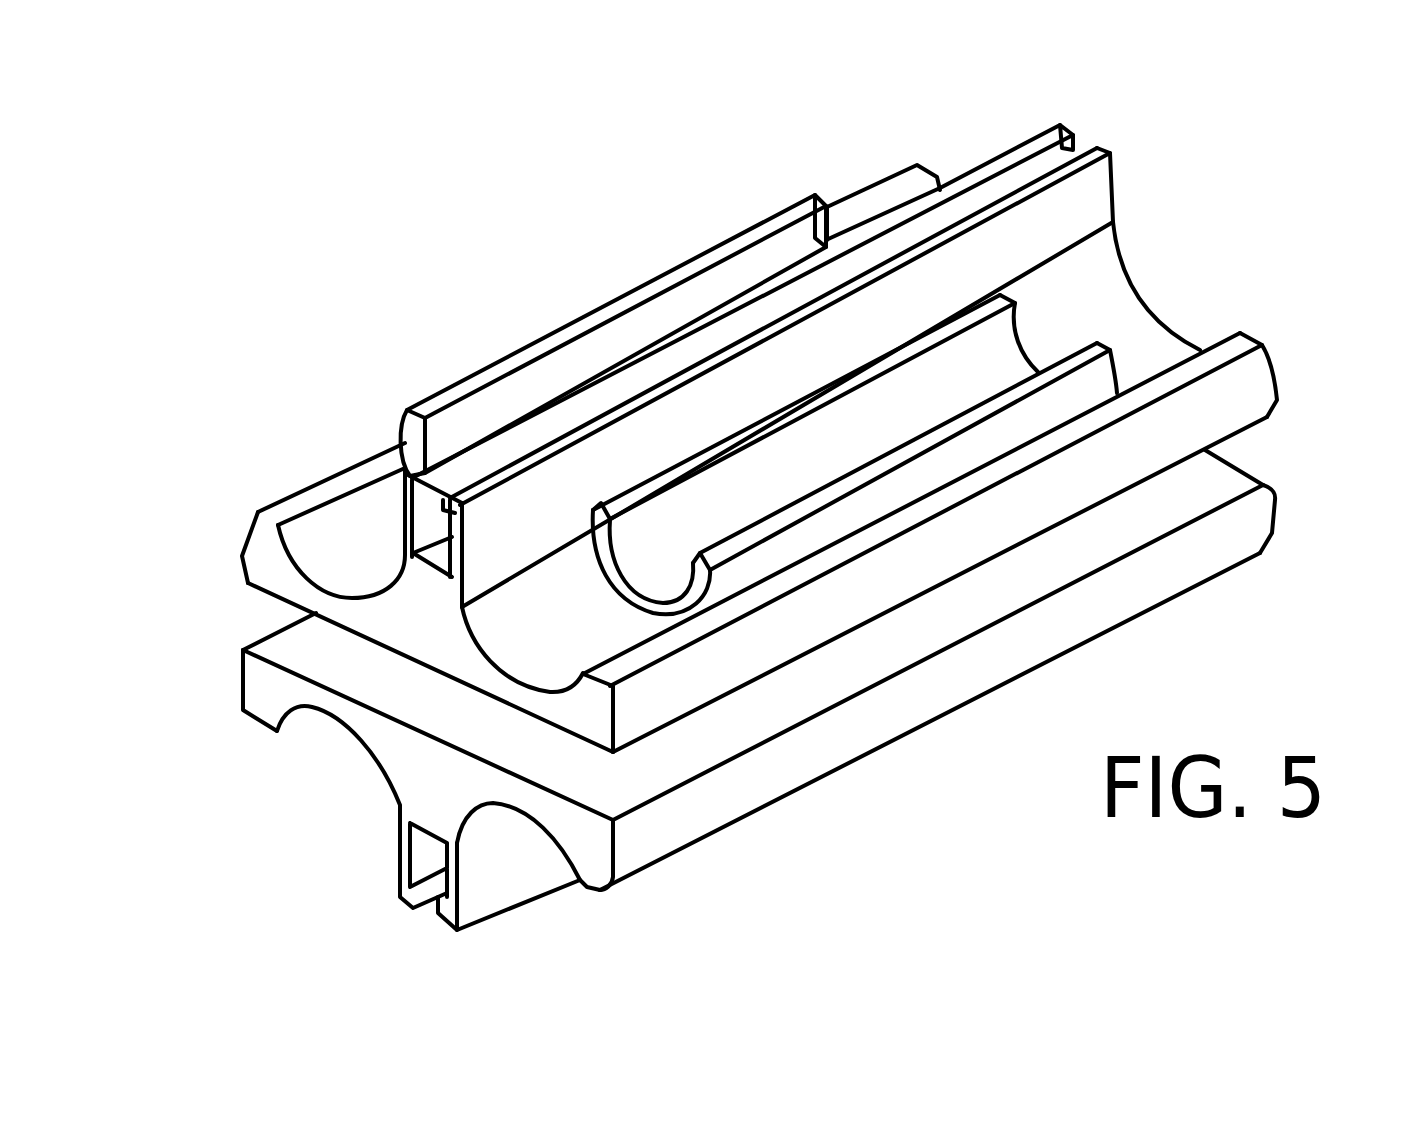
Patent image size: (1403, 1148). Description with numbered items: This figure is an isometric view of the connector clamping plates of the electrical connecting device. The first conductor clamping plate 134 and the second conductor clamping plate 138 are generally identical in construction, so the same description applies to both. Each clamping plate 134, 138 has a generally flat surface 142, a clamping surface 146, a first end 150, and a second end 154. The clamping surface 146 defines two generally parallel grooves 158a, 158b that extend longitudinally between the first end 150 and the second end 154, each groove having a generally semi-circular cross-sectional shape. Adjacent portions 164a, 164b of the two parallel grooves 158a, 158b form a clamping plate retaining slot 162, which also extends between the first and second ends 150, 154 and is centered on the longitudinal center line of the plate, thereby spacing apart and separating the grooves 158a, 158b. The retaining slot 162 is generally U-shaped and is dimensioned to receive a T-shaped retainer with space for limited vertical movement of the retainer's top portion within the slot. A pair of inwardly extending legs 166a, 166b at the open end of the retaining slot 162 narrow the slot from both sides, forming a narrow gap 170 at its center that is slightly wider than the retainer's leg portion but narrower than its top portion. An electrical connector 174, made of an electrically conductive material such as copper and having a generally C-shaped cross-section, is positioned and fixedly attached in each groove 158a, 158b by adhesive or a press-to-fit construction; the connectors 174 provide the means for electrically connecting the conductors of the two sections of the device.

The first conductor clamping plate 134 is at (449, 636).
The second conductor clamping plate 138 is at (461, 804).
The flat surface 142 is at (773, 708).
The clamping surface 146 is at (1072, 226).
The first end 150 is at (245, 520).
The second end 154 is at (1273, 363).
The groove 158a is at (362, 547).
The groove 158b is at (1147, 309).
The clamping plate retaining slot 162 is at (430, 574).
The adjacent portion 164a is at (398, 510).
The adjacent portion 164b is at (465, 546).
The inwardly extending leg 166a is at (402, 485).
The inwardly extending leg 166b is at (450, 510).
The narrow gap 170 is at (1080, 140).
The electrical connector 174 is at (562, 365).